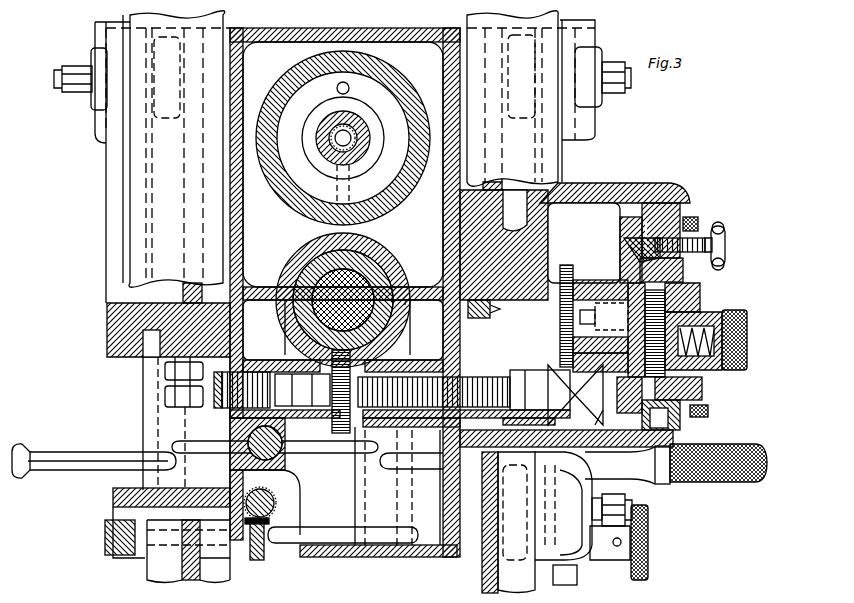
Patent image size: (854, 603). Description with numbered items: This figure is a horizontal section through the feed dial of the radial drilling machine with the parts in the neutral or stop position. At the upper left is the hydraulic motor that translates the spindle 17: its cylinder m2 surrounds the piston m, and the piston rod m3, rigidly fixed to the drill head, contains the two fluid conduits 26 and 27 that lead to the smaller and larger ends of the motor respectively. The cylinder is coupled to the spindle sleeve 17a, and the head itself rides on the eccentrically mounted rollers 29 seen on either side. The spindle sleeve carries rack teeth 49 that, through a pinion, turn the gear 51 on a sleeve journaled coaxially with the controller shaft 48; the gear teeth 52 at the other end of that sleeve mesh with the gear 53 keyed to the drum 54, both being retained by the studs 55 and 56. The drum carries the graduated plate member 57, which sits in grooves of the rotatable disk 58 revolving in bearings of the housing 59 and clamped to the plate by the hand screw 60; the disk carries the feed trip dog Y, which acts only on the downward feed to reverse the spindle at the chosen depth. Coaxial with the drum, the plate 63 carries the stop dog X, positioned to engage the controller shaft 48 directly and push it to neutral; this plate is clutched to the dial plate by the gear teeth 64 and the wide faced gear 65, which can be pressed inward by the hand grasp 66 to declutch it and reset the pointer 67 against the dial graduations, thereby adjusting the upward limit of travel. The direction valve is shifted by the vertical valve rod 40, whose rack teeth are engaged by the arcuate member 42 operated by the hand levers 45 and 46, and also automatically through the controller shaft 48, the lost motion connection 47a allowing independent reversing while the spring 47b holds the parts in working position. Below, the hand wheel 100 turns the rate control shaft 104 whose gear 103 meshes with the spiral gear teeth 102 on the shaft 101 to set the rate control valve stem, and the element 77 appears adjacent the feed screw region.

The spindle 17 is at (362, 281).
The spindle sleeve 17a is at (300, 275).
The fluid conduit 26 is at (329, 127).
The fluid conduit 27 is at (330, 142).
The rollers 29 is at (168, 118).
The valve rod 40 is at (272, 457).
The arcuate member 42 is at (222, 440).
The manually operable lever 45 is at (746, 483).
The manually operable lever 46 is at (60, 476).
The lost motion connection 47a is at (165, 384).
The spring 47b is at (268, 364).
The controller shaft 48 is at (292, 374).
The rack teeth 49 is at (400, 342).
The gear 51 is at (331, 414).
The gear teeth 52 is at (568, 408).
The gear 53 is at (569, 265).
The drum 54 is at (610, 282).
The stud 55 is at (486, 310).
The stud 56 is at (604, 313).
The plate member 57 is at (690, 300).
The disk 58 is at (680, 212).
The housing 59 is at (655, 185).
The hand screw 60 is at (724, 245).
The plate 63 is at (625, 215).
The gear teeth 64 is at (628, 250).
The wide faced gear 65 is at (700, 394).
The hand grasp 66 is at (747, 330).
The pointer 67 is at (708, 312).
The feed nut 77 is at (420, 376).
The hand wheel 100 is at (649, 575).
The shaft 101 is at (272, 498).
The spiral gear teeth 102 is at (275, 507).
The gear 103 is at (255, 562).
The rate control shaft 104 is at (334, 530).
The piston m is at (384, 140).
The cylinder m2 is at (304, 92).
The piston rod m3 is at (354, 146).
The stop dog X is at (601, 419).
The feed trip dog Y is at (682, 425).